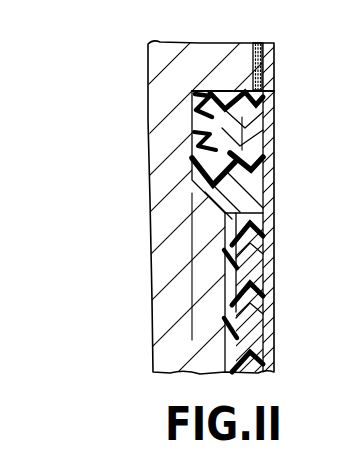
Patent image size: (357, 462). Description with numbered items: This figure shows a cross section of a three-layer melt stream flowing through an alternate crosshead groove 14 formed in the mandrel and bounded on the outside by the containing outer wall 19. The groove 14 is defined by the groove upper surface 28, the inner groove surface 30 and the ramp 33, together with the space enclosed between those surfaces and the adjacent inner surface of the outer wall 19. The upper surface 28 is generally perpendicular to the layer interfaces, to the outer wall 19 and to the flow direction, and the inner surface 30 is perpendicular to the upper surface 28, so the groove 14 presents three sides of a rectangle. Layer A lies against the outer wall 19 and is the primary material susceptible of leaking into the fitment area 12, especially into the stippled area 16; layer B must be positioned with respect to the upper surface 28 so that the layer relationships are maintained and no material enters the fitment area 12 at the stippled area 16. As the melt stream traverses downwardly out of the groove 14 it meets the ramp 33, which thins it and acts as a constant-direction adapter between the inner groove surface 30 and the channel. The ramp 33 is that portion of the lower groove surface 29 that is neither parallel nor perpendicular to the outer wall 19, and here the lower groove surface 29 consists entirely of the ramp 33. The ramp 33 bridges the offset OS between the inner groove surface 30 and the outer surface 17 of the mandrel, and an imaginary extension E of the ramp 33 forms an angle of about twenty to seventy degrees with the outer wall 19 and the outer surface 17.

The fitment area 12 is at (248, 63).
The groove 14 is at (192, 134).
The stippled area 16 is at (264, 65).
The outer surface of mandrel 17 is at (248, 272).
The outer wall 19 is at (275, 312).
The groove upper surface 28 is at (228, 106).
The lower groove surface 29 is at (212, 201).
The inner groove surface 30 is at (192, 91).
The ramp 33 is at (208, 191).
The layer A is at (235, 183).
The layer B is at (232, 133).
The imaginary extension of ramp E is at (222, 261).
The offset OS is at (275, 312).